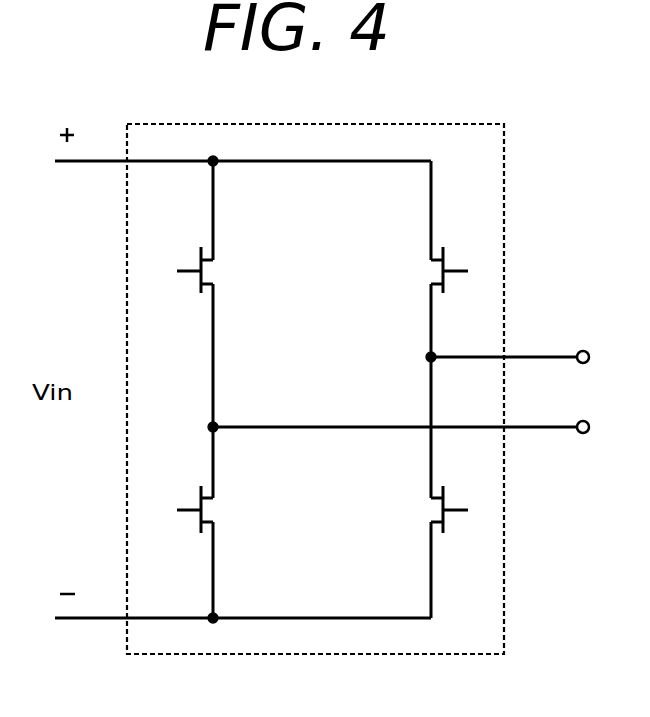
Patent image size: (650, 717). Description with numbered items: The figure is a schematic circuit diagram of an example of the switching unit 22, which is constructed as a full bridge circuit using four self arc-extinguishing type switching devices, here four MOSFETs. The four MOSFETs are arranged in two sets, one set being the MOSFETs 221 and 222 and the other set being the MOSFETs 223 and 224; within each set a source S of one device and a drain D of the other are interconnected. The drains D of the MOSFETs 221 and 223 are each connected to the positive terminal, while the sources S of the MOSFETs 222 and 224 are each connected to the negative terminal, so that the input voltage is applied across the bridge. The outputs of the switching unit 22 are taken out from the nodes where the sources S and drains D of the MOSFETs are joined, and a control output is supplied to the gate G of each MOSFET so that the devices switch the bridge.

The switching unit 22 is at (471, 123).
The MOSFET 221 is at (196, 252).
The MOSFET 222 is at (196, 492).
The MOSFET 223 is at (454, 258).
The MOSFET 224 is at (456, 503).